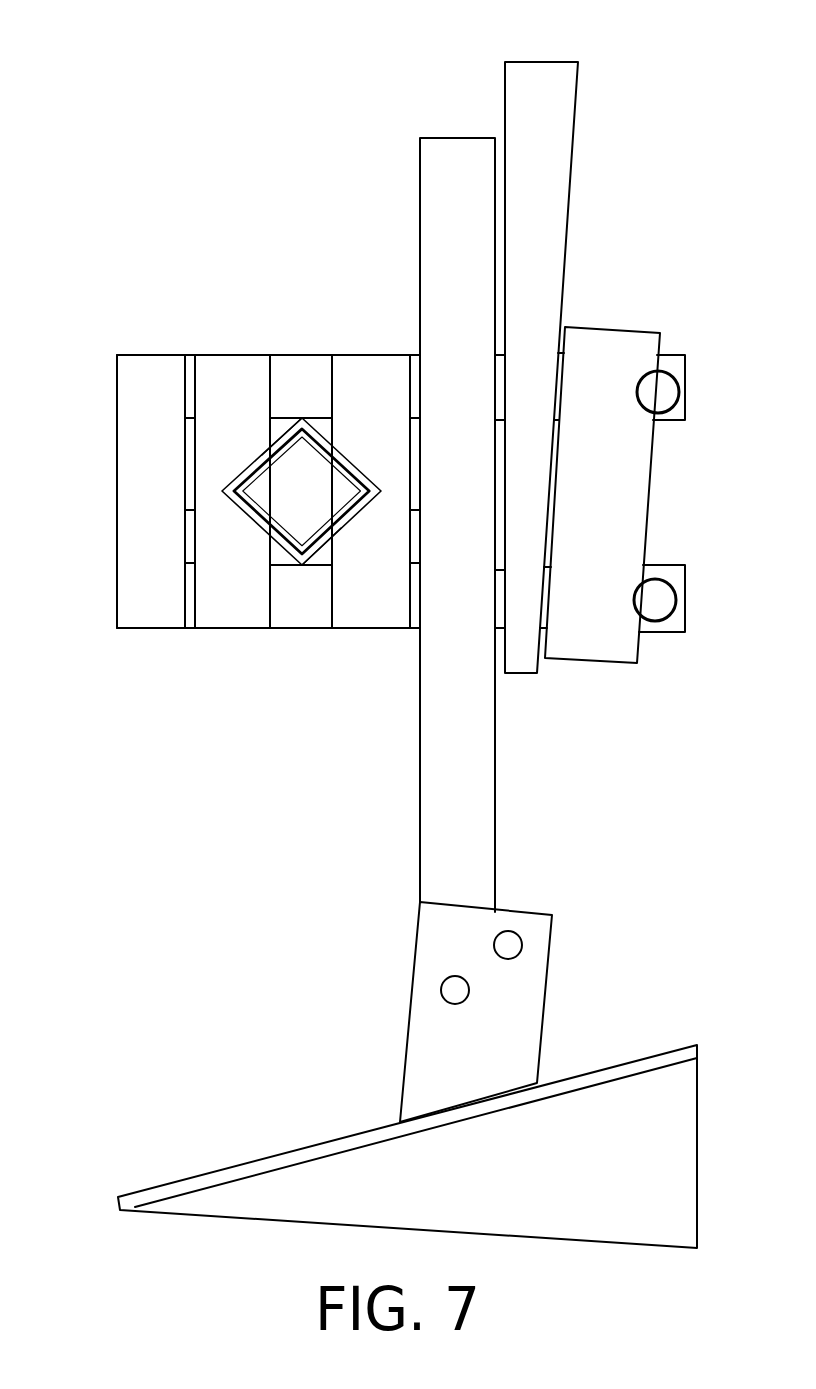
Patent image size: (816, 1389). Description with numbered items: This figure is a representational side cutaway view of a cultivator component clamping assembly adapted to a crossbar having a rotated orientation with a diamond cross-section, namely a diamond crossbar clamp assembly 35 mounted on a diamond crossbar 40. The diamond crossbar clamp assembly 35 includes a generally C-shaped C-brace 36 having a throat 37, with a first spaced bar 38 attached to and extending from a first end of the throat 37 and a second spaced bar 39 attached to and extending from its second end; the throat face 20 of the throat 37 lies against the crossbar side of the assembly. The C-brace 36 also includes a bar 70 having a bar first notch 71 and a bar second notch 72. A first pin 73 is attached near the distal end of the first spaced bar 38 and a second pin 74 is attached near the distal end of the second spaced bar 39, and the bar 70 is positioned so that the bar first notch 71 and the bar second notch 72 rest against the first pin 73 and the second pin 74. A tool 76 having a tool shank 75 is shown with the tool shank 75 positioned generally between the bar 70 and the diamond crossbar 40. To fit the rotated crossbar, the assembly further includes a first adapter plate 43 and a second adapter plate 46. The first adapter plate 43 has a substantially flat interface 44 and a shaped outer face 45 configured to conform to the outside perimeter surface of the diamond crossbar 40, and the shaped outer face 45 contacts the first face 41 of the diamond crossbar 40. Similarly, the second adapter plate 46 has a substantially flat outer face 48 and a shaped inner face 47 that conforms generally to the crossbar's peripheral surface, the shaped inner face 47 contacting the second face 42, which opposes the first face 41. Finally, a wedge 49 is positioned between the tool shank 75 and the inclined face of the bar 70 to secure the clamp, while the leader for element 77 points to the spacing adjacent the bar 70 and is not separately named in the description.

The throat face 20 is at (197, 543).
The diamond crossbar clamp assembly 35 is at (325, 162).
The C-brace 36 is at (96, 375).
The throat 37 is at (128, 537).
The first spaced bar 38 is at (302, 365).
The second spaced bar 39 is at (280, 613).
The diamond crossbar 40 is at (340, 570).
The first face 41 is at (283, 440).
The second face 42 is at (347, 527).
The first adapter plate 43 is at (215, 370).
The substantially flat interface 44 is at (185, 507).
The shaped outer face 45 is at (247, 465).
The second adapter plate 46 is at (388, 360).
The shaped inner face 47 is at (353, 457).
The substantially flat outer face 48 is at (418, 514).
The wedge 49 is at (520, 92).
The bar 70 is at (608, 333).
The bar first notch 71 is at (637, 393).
The bar second notch 72 is at (633, 598).
The first pin 73 is at (665, 387).
The second pin 74 is at (658, 607).
The tool shank 75 is at (437, 868).
The tool 76 is at (347, 1170).
The spacer plate 77 is at (554, 451).